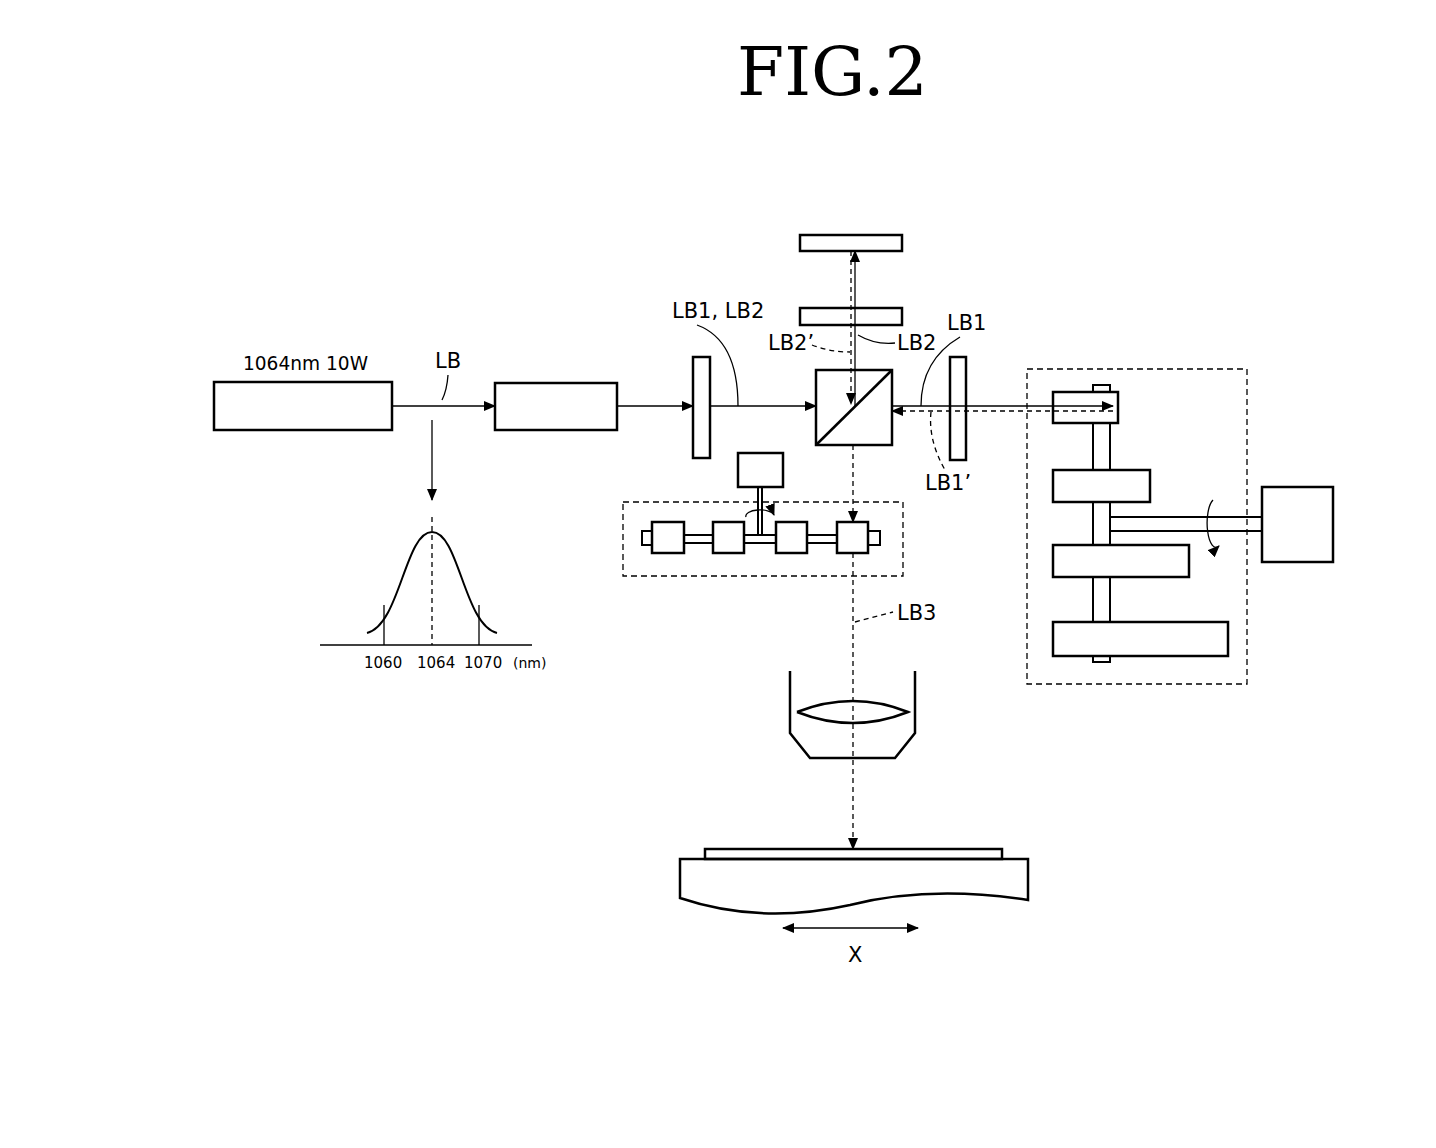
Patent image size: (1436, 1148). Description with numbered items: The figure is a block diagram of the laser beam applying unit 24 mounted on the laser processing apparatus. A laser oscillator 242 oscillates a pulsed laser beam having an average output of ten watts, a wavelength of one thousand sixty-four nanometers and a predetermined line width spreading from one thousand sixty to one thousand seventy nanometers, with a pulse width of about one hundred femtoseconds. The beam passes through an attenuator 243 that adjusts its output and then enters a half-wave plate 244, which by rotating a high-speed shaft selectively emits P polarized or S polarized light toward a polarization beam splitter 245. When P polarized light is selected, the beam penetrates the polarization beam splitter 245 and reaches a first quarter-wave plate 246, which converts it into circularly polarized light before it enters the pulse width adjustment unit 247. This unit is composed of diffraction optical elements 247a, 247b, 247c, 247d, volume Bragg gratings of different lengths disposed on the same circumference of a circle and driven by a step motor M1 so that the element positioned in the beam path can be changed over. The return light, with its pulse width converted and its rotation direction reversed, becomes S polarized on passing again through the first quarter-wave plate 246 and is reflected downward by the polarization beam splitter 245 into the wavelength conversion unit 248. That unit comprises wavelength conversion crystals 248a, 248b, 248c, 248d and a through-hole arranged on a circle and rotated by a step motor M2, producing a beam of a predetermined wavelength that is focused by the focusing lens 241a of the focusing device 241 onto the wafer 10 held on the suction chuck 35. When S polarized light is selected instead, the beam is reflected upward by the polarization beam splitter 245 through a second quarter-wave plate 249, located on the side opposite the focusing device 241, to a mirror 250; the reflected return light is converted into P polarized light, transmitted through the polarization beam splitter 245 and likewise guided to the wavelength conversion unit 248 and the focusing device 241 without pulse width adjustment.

The wafer 10 is at (728, 849).
The laser beam applying unit 24 is at (1152, 292).
The suction chuck 35 is at (678, 886).
The focusing device 241 is at (915, 695).
The focusing lens 241a is at (880, 722).
The laser oscillator 242 is at (272, 432).
The attenuator 243 is at (537, 432).
The half-wave plate 244 is at (693, 365).
The polarization beam splitter 245 is at (876, 447).
The first quarter-wave plate 246 is at (966, 365).
The pulse width adjustment unit 247 is at (1137, 516).
The diffraction optical element 247a is at (1118, 400).
The diffraction optical element 247b is at (1125, 470).
The diffraction optical element 247c is at (1155, 577).
The diffraction optical element 247d is at (1183, 656).
The wavelength conversion unit 248 is at (719, 569).
The wavelength conversion crystal 248a is at (840, 553).
The wavelength conversion crystal 248b is at (787, 553).
The wavelength conversion crystal 248c is at (726, 553).
The wavelength conversion crystal 248d is at (668, 553).
The second quarter-wave plate 249 is at (880, 308).
The mirror 250 is at (880, 235).
The step motor M1 is at (1316, 487).
The step motor M2 is at (783, 468).